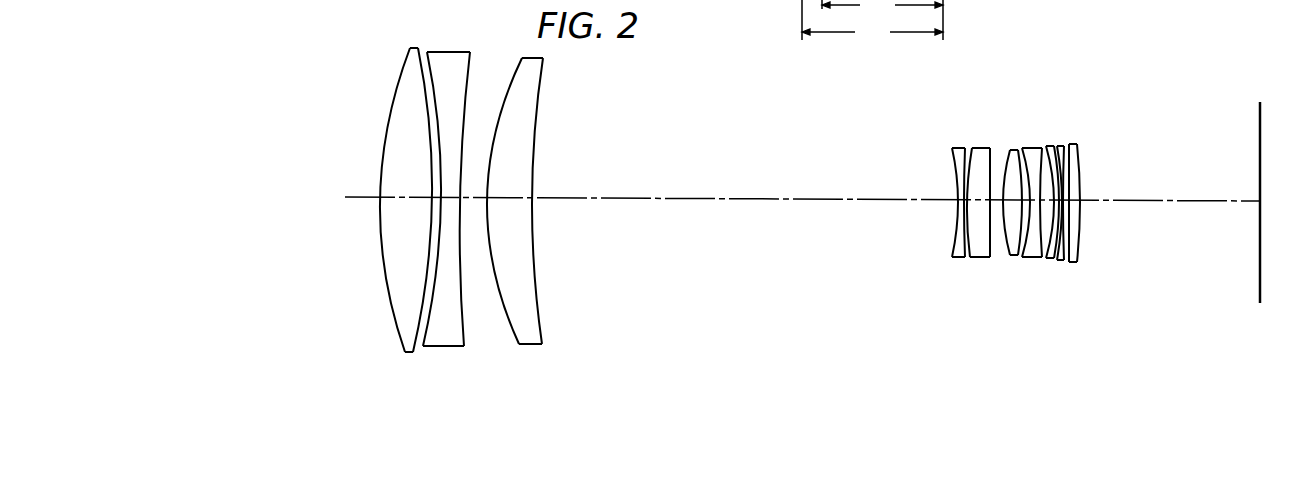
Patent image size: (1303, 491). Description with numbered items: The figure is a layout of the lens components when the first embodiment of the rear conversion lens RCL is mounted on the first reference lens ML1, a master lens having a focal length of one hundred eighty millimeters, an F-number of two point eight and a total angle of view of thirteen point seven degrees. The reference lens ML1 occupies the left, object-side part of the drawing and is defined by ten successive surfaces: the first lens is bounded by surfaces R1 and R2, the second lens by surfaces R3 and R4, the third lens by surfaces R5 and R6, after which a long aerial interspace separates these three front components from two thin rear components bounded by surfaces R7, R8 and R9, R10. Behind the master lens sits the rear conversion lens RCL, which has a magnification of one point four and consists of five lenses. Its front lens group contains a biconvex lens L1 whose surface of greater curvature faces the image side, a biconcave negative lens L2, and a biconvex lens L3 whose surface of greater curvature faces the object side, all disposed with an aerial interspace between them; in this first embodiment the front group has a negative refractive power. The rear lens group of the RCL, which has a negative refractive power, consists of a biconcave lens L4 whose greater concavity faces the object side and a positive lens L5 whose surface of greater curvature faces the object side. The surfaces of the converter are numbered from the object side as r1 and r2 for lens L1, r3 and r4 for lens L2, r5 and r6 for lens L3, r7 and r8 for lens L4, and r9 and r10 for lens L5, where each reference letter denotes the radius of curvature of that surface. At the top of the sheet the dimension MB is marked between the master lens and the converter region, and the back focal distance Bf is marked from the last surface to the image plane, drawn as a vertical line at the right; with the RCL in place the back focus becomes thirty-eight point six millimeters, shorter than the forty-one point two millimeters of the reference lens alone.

The first lens surface radius of curvature R1 is at (397, 335).
The second lens surface radius of curvature R2 is at (415, 348).
The third lens surface radius of curvature R3 is at (428, 325).
The fourth lens surface radius of curvature R4 is at (467, 325).
The fifth lens surface radius of curvature R5 is at (512, 333).
The sixth lens surface radius of curvature R6 is at (543, 325).
The seventh lens surface radius of curvature R7 is at (952, 242).
The eighth lens surface radius of curvature R8 is at (968, 244).
The ninth lens surface radius of curvature R9 is at (977, 250).
The tenth lens surface radius of curvature R10 is at (992, 256).
The first reference lens ML1 is at (992, 379).
The rear conversion lens RCL is at (1122, 82).
The biconvex lens L1 is at (1004, 220).
The biconcave negative lens L2 is at (1037, 229).
The biconvex lens L3 is at (1067, 220).
The biconcave lens L4 is at (1096, 229).
The positive lens L5 is at (1122, 202).
The first RCL surface radius of curvature r1 is at (1012, 256).
The second RCL surface radius of curvature r2 is at (1015, 257).
The third RCL surface radius of curvature r3 is at (1027, 257).
The fourth RCL surface radius of curvature r4 is at (1037, 257).
The fifth RCL surface radius of curvature r5 is at (1044, 258).
The sixth RCL surface radius of curvature r6 is at (1049, 260).
The seventh RCL surface radius of curvature r7 is at (1056, 260).
The eighth RCL surface radius of curvature r8 is at (1064, 262).
The ninth RCL surface radius of curvature r9 is at (1072, 264).
The tenth RCL surface radius of curvature r10 is at (1080, 262).
The distance from master lens to rear conversion lens MB is at (882, 8).
The back focal distance Bf is at (872, 22).